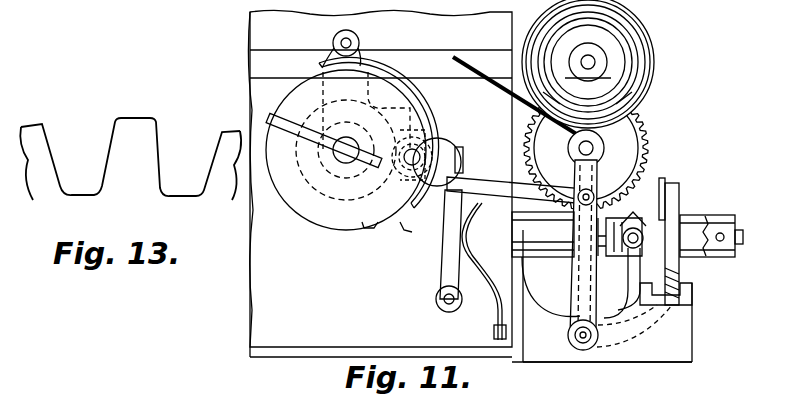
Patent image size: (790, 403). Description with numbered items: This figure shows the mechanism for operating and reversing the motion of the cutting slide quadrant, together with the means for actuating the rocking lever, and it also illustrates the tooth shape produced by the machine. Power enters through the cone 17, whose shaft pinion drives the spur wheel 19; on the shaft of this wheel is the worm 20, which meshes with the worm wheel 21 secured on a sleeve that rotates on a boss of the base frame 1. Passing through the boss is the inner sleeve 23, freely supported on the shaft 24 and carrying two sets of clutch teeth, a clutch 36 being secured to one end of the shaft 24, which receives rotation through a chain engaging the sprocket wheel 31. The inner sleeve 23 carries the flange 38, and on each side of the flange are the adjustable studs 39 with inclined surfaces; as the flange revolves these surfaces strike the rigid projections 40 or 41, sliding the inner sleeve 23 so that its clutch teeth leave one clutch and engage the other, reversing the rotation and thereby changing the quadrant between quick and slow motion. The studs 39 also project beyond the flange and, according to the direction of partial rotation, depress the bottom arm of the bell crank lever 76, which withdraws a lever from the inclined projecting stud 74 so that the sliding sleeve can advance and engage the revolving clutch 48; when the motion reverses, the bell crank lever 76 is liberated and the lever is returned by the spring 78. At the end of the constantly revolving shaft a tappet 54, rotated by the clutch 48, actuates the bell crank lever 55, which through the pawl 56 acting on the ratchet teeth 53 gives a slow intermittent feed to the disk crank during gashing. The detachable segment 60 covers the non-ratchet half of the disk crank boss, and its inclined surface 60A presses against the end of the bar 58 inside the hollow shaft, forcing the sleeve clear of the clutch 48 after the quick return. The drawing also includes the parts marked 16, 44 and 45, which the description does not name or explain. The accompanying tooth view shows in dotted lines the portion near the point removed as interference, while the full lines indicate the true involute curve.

The base frame 1 is at (346, 287).
The base plate 16 is at (626, 362).
The cone 17 is at (653, 62).
The spur wheel 19 is at (647, 124).
The worm 20 is at (604, 153).
The worm wheel 21 is at (573, 316).
The inner sleeve 23 is at (696, 258).
The shaft 24 is at (743, 237).
The sprocket wheel 31 is at (632, 256).
The clutch 36 is at (718, 215).
The flange 38 is at (680, 185).
The adjustable stud 39 is at (662, 180).
The rigid projection 40 is at (690, 300).
The rigid projection 41 is at (642, 294).
The lever 44 is at (495, 177).
The lever arm 45 is at (444, 268).
The clutch 48 is at (420, 135).
The ratchet teeth 53 is at (296, 210).
The tappet 54 is at (445, 142).
The bell crank lever 55 is at (360, 66).
The pawl 56 is at (330, 60).
The bar 58 is at (420, 152).
The detachable segment 60 is at (398, 225).
The inclined surface 60A is at (430, 236).
The inclined projecting stud 74 is at (463, 147).
The bell crank lever 76 is at (568, 283).
The spring 78 is at (481, 264).